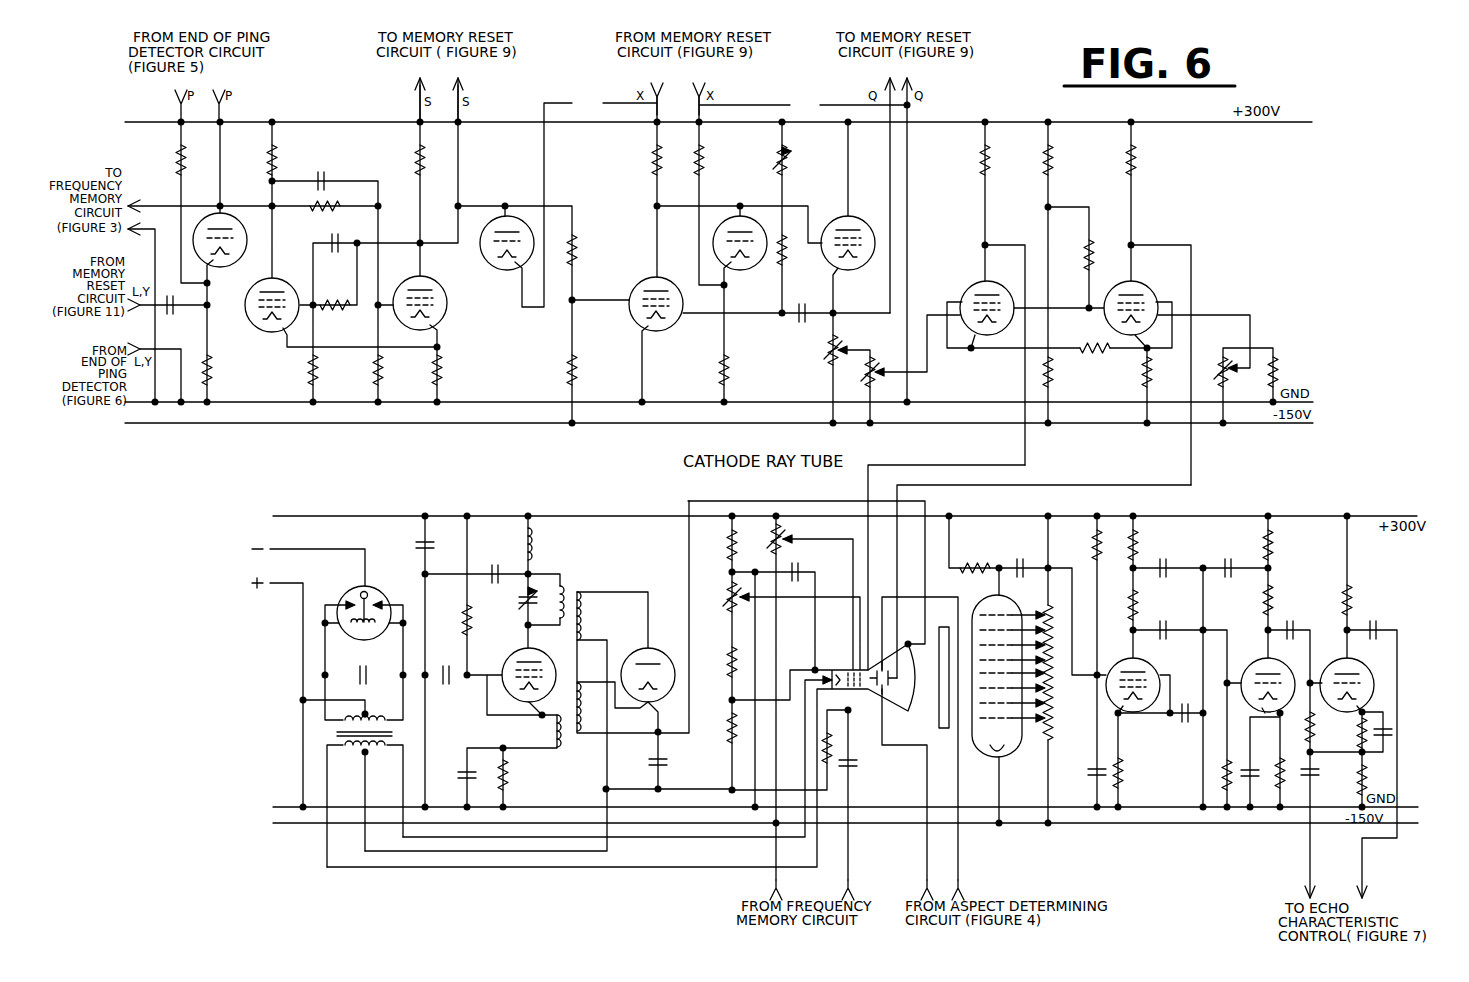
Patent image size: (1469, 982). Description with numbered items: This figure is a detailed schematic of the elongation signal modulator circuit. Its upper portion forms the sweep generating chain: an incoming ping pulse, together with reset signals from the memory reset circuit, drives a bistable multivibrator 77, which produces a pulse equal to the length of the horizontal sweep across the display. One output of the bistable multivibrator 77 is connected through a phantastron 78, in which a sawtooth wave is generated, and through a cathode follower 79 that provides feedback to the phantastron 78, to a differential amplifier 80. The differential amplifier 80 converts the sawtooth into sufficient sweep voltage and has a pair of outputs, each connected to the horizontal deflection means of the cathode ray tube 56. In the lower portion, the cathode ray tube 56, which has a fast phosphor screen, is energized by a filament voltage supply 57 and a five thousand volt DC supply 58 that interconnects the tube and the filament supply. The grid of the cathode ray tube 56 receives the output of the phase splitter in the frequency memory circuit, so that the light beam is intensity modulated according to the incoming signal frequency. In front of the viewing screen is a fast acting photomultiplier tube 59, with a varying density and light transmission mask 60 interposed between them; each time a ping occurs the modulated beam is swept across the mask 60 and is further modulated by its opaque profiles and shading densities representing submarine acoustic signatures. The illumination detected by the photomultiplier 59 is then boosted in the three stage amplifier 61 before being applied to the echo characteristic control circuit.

The bistable multivibrator 77 is at (304, 162).
The phantastron 78 is at (591, 125).
The cathode follower 79 is at (812, 126).
The differential amplifier 80 is at (1150, 148).
The filament voltage supply 57 is at (331, 540).
The five thousand volt DC supply 58 is at (593, 546).
The cathode ray tube 56 is at (912, 700).
The mask 60 is at (942, 627).
The photomultiplier tube 59 is at (1014, 757).
The amplifier 61 is at (1366, 514).